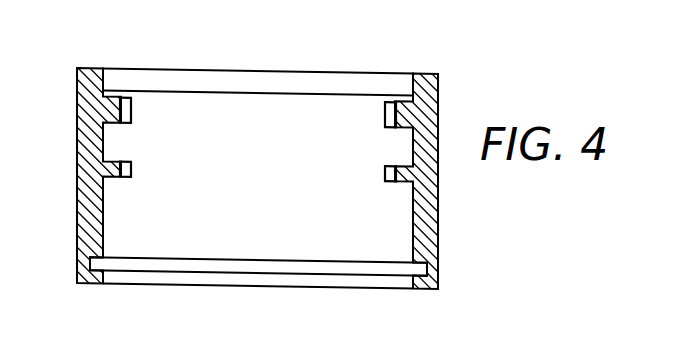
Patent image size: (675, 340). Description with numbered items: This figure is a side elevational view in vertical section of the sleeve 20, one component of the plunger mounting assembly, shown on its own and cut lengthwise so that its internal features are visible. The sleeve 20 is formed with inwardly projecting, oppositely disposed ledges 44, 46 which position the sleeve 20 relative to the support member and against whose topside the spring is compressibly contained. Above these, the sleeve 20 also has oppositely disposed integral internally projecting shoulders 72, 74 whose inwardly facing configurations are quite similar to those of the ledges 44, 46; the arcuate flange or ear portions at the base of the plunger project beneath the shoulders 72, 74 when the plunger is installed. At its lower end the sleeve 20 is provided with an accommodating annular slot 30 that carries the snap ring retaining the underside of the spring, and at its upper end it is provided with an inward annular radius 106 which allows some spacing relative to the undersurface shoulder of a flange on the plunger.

The sleeve 20 is at (229, 178).
The inward annular radius 106 is at (330, 81).
The annular slot 30 is at (232, 263).
The shoulder 72 is at (117, 123).
The shoulder 74 is at (408, 126).
The ledge 44 is at (132, 170).
The ledge 46 is at (385, 169).